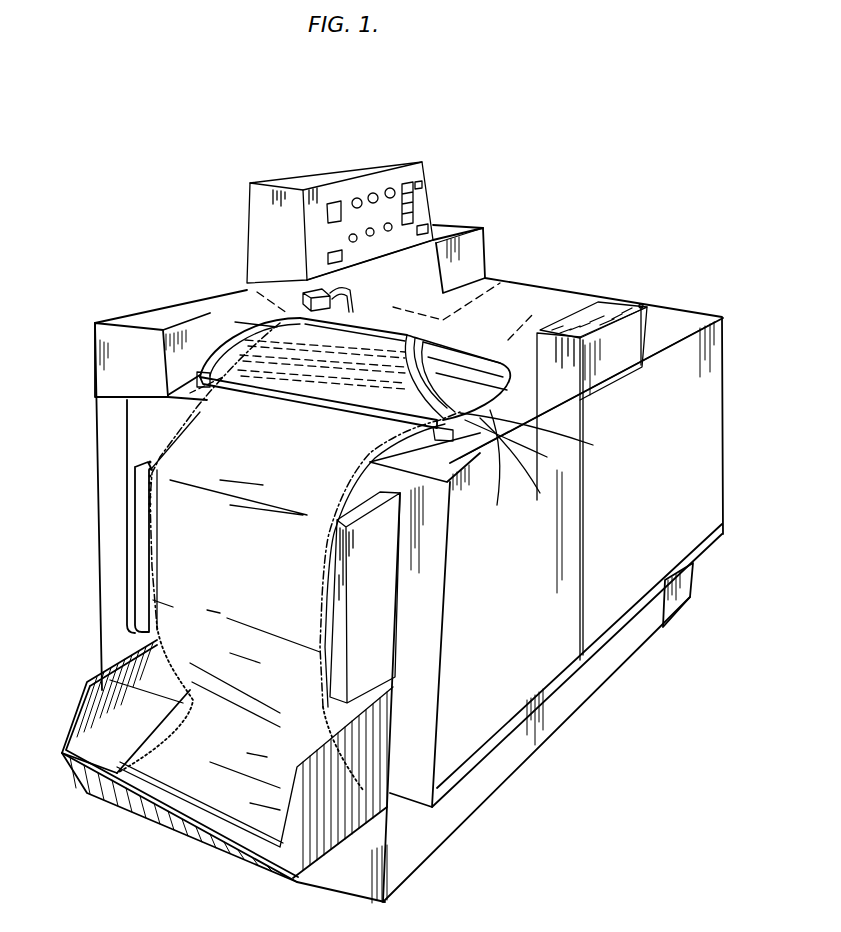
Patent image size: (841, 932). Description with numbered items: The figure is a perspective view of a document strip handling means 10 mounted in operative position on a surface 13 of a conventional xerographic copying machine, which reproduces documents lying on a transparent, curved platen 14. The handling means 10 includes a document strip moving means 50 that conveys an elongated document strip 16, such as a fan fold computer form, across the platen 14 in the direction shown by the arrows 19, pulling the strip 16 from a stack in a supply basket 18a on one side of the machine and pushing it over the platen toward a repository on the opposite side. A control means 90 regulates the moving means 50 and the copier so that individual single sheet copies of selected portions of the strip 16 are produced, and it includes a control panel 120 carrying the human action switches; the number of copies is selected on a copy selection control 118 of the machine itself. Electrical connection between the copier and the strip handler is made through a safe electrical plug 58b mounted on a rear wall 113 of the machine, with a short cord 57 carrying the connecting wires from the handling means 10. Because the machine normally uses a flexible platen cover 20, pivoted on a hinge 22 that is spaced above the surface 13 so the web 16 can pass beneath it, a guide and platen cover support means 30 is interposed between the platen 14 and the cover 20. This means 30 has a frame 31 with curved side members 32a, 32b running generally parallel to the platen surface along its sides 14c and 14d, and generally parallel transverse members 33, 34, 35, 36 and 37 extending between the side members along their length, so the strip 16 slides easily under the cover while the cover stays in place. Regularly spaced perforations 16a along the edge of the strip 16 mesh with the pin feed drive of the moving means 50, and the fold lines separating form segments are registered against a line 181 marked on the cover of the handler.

The document strip handling means 10 is at (652, 327).
The surface 13 is at (643, 307).
The platen 14 is at (515, 393).
The side of platen 14c is at (262, 335).
The side of platen 14d is at (499, 473).
The document strip 16 is at (450, 318).
The perforations 16a is at (155, 493).
The supply basket 18a is at (87, 685).
The arrows 19 is at (560, 292).
The platen cover 20 is at (415, 335).
The hinge means 22 is at (377, 428).
The guide and platen cover support means 30 is at (542, 436).
The frame 31 is at (520, 446).
The curved side member 32a is at (277, 327).
The curved side member 32b is at (522, 470).
The transverse member 33 is at (300, 378).
The transverse member 34 is at (281, 370).
The transverse member 35 is at (247, 367).
The transverse member 36 is at (257, 292).
The transverse member 37 is at (430, 350).
The document strip moving means 50 is at (630, 363).
The short cord 57 is at (357, 307).
The safe electrical plug 58b is at (310, 288).
The control means 90 is at (603, 377).
The rear wall 113 is at (458, 240).
The copy selection control 118 is at (373, 192).
The control panel 120 is at (618, 303).
The line 181 is at (373, 303).